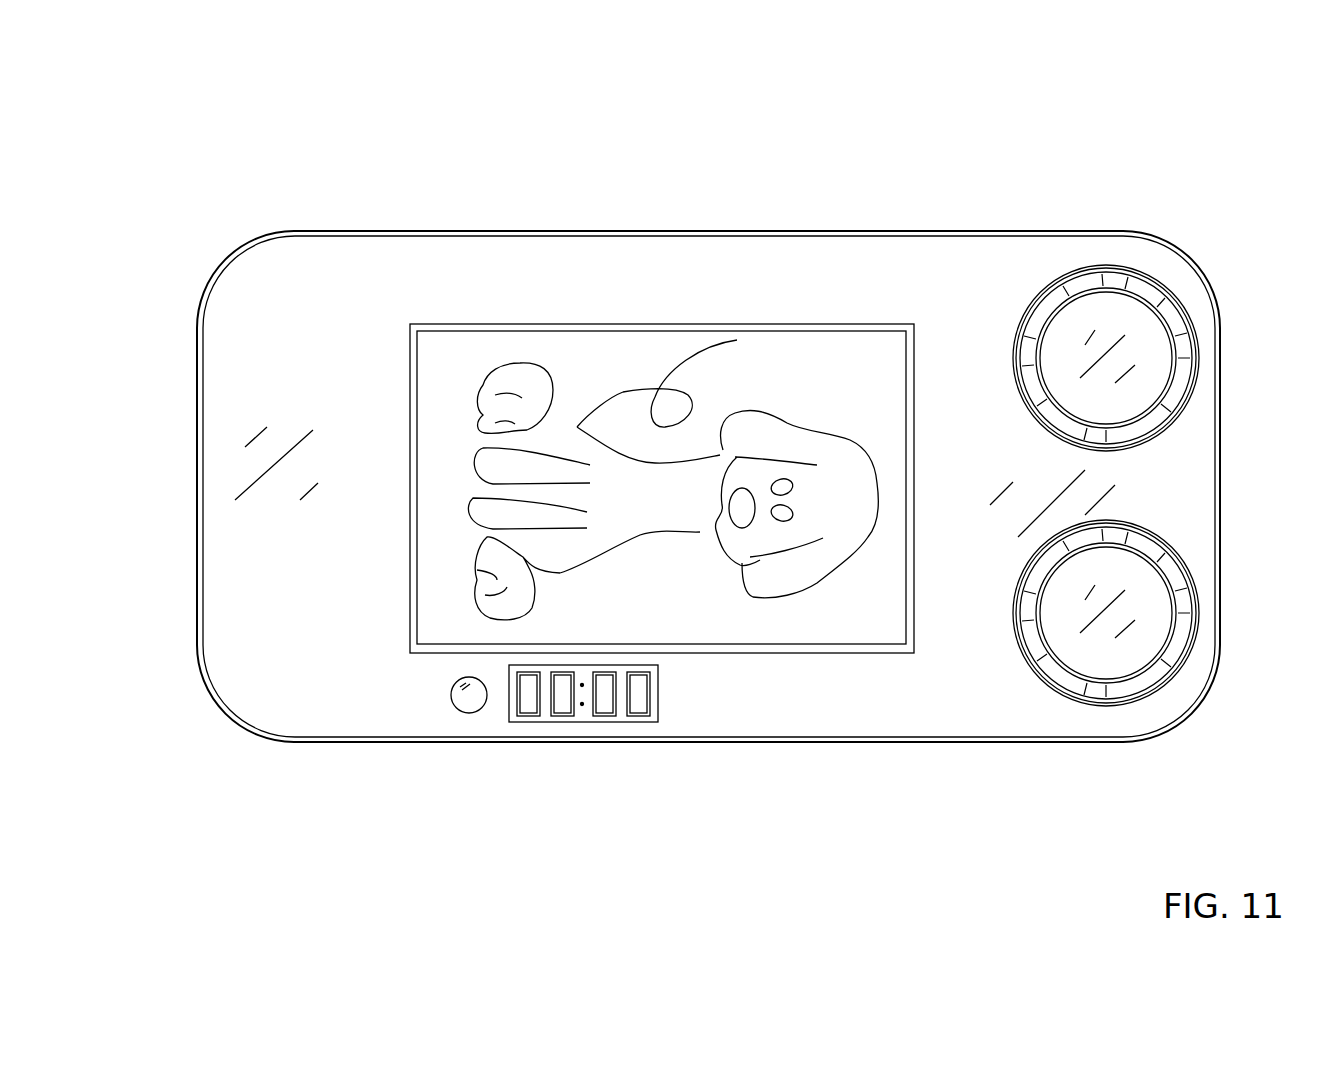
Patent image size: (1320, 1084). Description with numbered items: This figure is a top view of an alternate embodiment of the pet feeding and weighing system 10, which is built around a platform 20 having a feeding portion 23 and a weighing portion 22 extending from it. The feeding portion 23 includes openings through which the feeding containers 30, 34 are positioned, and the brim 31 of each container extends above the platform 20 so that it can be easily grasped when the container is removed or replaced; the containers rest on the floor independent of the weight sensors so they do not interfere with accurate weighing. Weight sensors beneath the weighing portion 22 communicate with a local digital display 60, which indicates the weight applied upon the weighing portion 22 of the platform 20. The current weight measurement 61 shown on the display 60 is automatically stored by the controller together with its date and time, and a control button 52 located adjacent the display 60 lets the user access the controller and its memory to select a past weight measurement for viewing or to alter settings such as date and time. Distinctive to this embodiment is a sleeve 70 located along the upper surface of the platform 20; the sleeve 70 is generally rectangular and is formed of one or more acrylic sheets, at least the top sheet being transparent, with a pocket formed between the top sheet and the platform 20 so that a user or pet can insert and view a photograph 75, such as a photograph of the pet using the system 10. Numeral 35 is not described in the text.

The pet feeding and weighing system 10 is at (236, 171).
The platform 20 is at (236, 337).
The weighing portion 22 is at (798, 298).
The feeding portion 23 is at (1127, 493).
The feeding container 30 is at (1170, 275).
The brim 31 is at (1063, 277).
The feeding container 34 is at (1042, 690).
The second dial ring 35 is at (1103, 703).
The control button 52 is at (466, 705).
The local digital display 60 is at (640, 717).
The current weight measurement 61 is at (600, 712).
The sleeve 70 is at (630, 318).
The photograph 75 is at (735, 340).